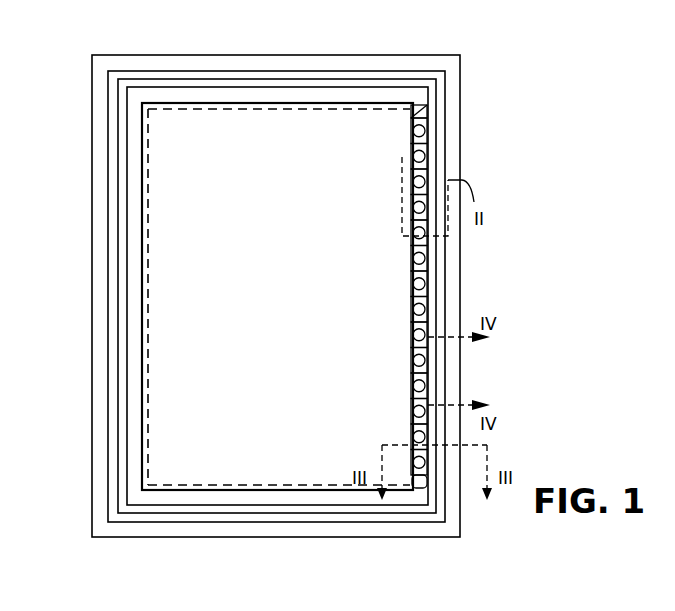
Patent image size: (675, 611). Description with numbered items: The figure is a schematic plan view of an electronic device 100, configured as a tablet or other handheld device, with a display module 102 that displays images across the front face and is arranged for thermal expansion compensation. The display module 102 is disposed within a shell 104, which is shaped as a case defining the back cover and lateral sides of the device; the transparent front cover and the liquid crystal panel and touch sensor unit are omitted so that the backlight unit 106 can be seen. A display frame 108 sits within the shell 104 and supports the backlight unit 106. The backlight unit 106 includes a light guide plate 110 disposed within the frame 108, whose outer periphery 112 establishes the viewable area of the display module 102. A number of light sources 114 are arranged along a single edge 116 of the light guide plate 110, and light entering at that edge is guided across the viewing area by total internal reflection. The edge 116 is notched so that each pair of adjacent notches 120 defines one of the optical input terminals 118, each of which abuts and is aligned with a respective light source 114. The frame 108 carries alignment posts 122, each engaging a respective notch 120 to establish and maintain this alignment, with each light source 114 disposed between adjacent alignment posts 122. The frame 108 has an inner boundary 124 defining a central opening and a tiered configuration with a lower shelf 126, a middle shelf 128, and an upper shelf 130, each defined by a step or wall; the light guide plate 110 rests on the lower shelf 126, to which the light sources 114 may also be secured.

The electronic device 100 is at (492, 48).
The display module 102 is at (357, 58).
The shell 104 is at (452, 110).
The backlight unit 106 is at (420, 97).
The display frame 108 is at (283, 69).
The light guide plate 110 is at (295, 281).
The outer periphery 112 is at (143, 214).
The light sources 114 is at (432, 257).
The edge 116 is at (421, 488).
The optical input terminals 118 is at (417, 287).
The notches 120 is at (434, 129).
The alignment posts 122 is at (417, 372).
The inner boundary 124 is at (153, 229).
The lower shelf 126 is at (137, 143).
The middle shelf 128 is at (122, 108).
The upper shelf 130 is at (168, 69).